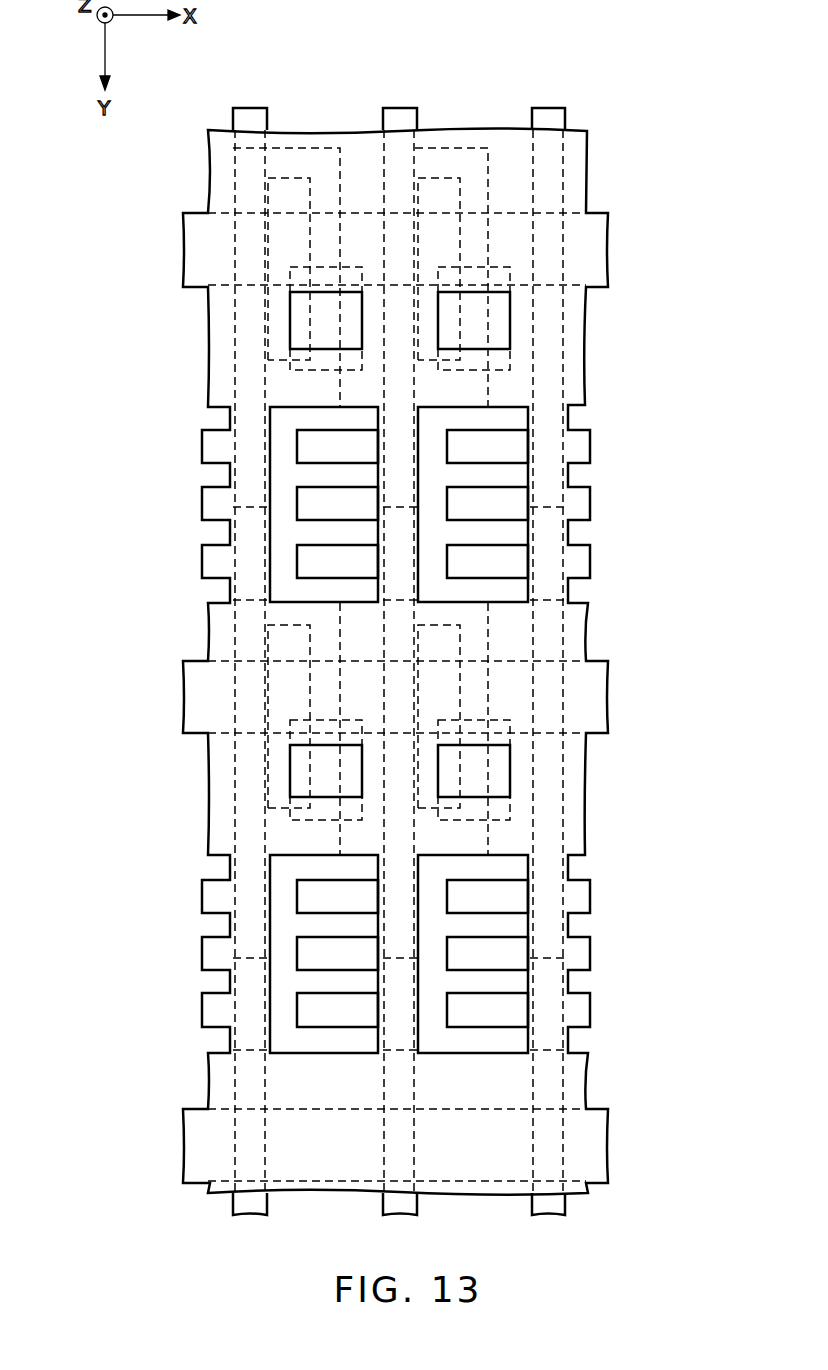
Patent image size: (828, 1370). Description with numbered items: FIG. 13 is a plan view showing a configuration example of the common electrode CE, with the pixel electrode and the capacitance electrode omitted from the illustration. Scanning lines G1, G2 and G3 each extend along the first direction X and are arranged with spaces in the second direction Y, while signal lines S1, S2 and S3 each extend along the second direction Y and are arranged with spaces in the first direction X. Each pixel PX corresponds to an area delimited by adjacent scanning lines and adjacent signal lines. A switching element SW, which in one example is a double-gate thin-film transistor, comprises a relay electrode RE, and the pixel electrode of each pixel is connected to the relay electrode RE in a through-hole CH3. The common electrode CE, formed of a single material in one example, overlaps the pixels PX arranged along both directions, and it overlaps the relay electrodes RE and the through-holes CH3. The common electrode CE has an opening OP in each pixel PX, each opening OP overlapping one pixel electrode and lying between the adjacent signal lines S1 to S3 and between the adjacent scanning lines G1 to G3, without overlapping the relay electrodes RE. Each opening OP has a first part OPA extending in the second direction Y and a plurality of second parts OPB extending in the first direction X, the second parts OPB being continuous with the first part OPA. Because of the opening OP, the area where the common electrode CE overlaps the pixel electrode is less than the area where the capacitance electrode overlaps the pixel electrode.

The pixel PX is at (354, 70).
The switching element SW is at (289, 128).
The signal line S1 is at (251, 122).
The signal line S2 is at (401, 122).
The signal line S3 is at (549, 122).
The scanning line G1 is at (597, 238).
The scanning line G2 is at (597, 683).
The scanning line G3 is at (597, 1125).
The through-hole CH3 is at (290, 310).
The relay electrode RE is at (290, 360).
The common electrode CE is at (222, 381).
The opening OP is at (312, 730).
The first part OPA is at (285, 472).
The second part OPB is at (343, 417).